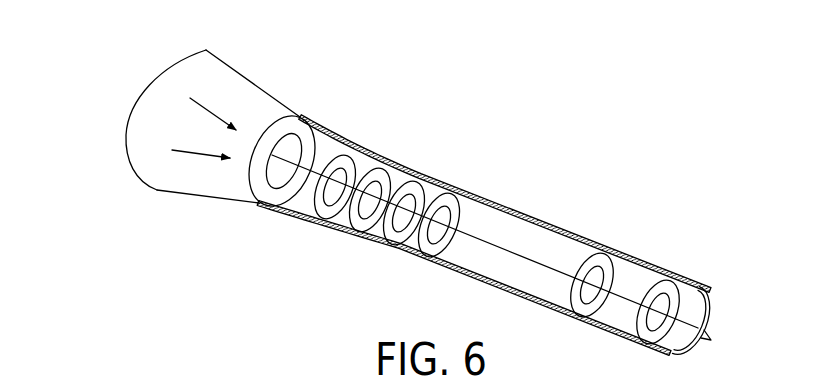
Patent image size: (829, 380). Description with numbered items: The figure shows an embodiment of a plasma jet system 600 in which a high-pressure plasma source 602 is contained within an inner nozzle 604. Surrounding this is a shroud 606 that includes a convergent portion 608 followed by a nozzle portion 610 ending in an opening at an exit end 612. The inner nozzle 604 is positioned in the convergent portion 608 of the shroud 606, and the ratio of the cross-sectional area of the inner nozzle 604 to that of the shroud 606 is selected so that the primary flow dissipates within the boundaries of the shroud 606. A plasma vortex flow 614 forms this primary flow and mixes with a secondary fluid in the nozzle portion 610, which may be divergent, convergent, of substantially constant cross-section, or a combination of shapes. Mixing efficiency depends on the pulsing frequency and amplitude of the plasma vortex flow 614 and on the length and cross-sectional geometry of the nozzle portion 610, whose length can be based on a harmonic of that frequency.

The plasma jet system 600 is at (116, 46).
The high-pressure plasma source 602 is at (298, 135).
The inner nozzle 604 is at (257, 196).
The shroud 606 is at (231, 52).
The convergent portion 608 is at (260, 88).
The nozzle portion 610 is at (446, 185).
The exit end 612 is at (694, 300).
The plasma vortex flow 614 is at (373, 169).